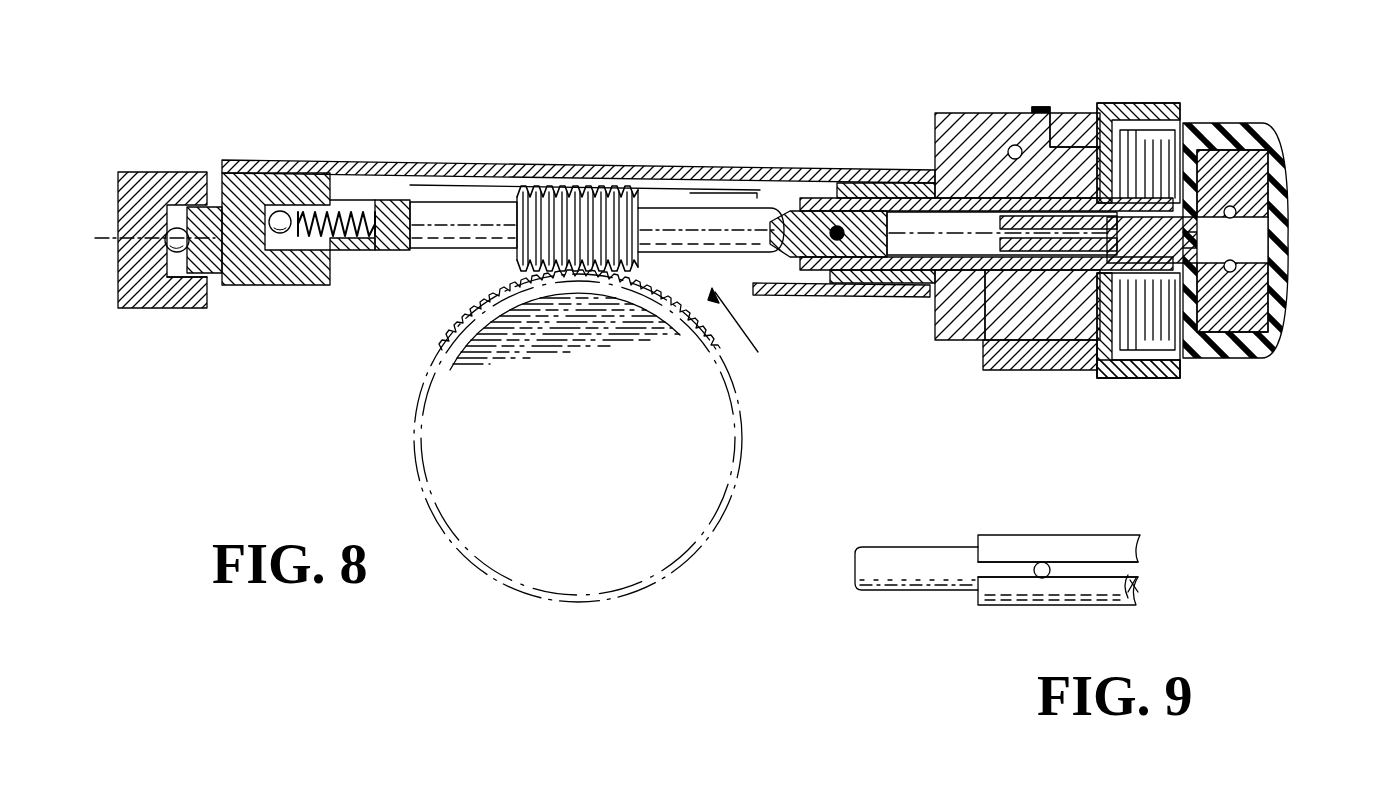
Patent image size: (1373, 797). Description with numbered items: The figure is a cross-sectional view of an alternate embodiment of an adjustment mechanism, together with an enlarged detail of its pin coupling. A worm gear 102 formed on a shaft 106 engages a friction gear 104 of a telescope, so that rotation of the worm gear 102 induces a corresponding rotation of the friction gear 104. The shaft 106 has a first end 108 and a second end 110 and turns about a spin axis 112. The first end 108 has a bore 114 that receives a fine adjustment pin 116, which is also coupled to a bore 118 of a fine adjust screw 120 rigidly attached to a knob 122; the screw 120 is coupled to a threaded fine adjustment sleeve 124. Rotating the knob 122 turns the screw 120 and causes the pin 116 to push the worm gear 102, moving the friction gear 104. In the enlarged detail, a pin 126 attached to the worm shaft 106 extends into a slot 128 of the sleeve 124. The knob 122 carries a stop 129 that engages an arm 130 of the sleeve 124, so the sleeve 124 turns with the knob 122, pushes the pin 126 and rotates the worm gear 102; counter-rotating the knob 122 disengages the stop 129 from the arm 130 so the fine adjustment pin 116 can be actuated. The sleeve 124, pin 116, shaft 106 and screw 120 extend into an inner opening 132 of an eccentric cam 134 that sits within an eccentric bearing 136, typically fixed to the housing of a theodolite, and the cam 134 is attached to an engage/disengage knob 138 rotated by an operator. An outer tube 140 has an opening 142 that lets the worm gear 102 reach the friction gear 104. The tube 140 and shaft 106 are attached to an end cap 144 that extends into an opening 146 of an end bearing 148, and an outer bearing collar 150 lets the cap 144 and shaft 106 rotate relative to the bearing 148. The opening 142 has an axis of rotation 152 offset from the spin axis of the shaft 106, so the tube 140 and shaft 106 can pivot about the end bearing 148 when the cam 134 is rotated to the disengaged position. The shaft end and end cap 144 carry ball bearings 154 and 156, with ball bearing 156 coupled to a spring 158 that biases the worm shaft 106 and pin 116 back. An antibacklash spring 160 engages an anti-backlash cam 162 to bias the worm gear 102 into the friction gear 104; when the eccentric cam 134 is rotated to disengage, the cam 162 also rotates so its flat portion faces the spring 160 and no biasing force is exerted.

In FIG. 8, the worm gear 102 is at (590, 186).
In FIG. 8, the friction gear 104 is at (440, 438).
In FIG. 8, the shaft 106 is at (446, 242).
In FIG. 9, the shaft 106 is at (915, 575).
In FIG. 8, the first end 108 is at (905, 272).
In FIG. 8, the second end 110 is at (388, 199).
In FIG. 8, the spin axis 112 is at (700, 214).
In FIG. 8, the bore 114 is at (842, 197).
In FIG. 8, the fine adjustment pin 116 is at (937, 300).
In FIG. 8, the bore 118 is at (1128, 378).
In FIG. 8, the fine adjust screw 120 is at (1252, 268).
In FIG. 8, the knob 122 is at (1262, 322).
In FIG. 8, the fine adjustment sleeve 124 is at (1062, 200).
In FIG. 9, the fine adjustment sleeve 124 is at (1117, 552).
In FIG. 8, the pin 126 is at (838, 242).
In FIG. 9, the pin 126 is at (1043, 562).
In FIG. 9, the slot 128 is at (997, 572).
In FIG. 8, the stop 129 is at (1225, 125).
In FIG. 8, the arm 130 is at (1237, 214).
In FIG. 8, the inner opening 132 is at (992, 300).
In FIG. 8, the eccentric cam 134 is at (1040, 372).
In FIG. 8, the eccentric bearing 136 is at (1045, 108).
In FIG. 8, the engage/disengage knob 138 is at (1150, 105).
In FIG. 8, the outer tube 140 is at (446, 162).
In FIG. 8, the opening 142 is at (762, 354).
In FIG. 8, the end cap 144 is at (250, 287).
In FIG. 8, the opening 146 is at (207, 204).
In FIG. 8, the end bearing 148 is at (178, 226).
In FIG. 8, the outer bearing collar 150 is at (190, 290).
In FIG. 8, the axis of rotation 152 is at (118, 222).
In FIG. 8, the ball bearing 154 is at (165, 300).
In FIG. 8, the ball bearing 156 is at (285, 210).
In FIG. 8, the spring 158 is at (340, 252).
In FIG. 8, the antibacklash spring 160 is at (1040, 107).
In FIG. 8, the anti-backlash cam 162 is at (937, 127).